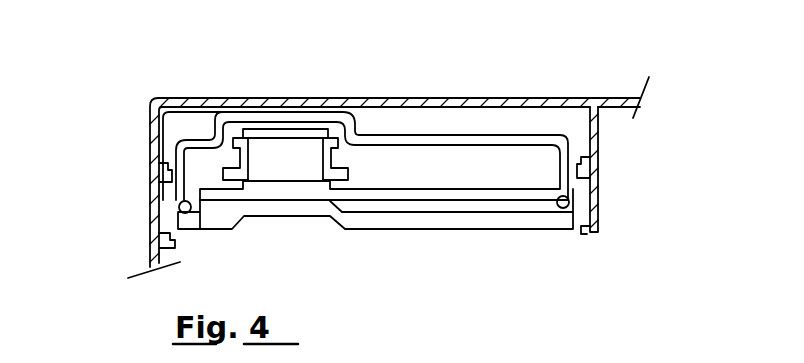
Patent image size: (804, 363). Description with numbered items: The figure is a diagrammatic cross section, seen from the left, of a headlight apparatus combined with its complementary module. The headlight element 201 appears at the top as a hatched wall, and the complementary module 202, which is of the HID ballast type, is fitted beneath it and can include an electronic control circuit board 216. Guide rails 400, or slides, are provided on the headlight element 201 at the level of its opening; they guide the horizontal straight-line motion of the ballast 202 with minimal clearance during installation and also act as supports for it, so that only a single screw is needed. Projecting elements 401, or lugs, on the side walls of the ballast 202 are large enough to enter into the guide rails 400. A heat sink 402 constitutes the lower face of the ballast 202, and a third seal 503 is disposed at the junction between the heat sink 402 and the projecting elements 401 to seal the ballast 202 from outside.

The headlight element 201 is at (470, 98).
The electronic control circuit board 216 is at (390, 191).
The complementary module 202 is at (486, 165).
The guide rails 400 is at (166, 172).
The projecting elements 401 is at (168, 211).
The heat sink 402 is at (375, 230).
The third seal 503 is at (188, 213).